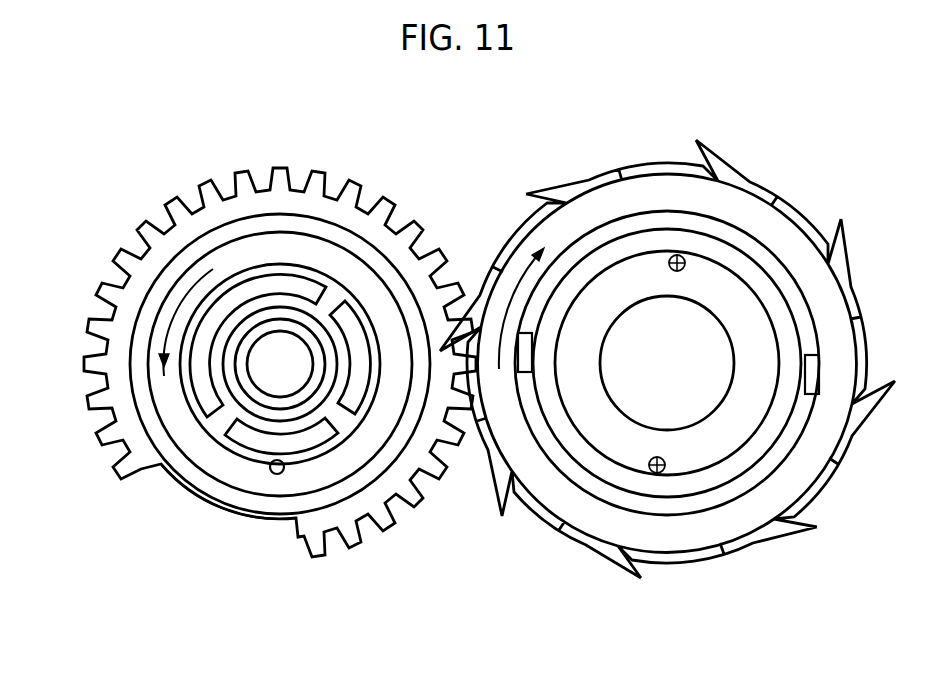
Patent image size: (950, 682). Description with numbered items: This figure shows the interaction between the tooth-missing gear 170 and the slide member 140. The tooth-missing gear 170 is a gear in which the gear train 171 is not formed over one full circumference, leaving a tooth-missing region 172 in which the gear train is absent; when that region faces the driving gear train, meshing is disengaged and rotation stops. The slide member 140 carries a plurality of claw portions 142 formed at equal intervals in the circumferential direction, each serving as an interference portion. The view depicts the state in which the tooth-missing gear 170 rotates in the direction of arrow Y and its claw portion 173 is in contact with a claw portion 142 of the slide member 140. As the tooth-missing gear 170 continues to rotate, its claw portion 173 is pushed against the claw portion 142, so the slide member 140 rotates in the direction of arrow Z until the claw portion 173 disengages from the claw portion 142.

The slide member 140 is at (757, 130).
The claw portion 142 is at (437, 352).
The tooth-missing gear 170 is at (150, 178).
The gear train 171 is at (116, 243).
The tooth-missing region 172 is at (198, 506).
The claw portion 173 is at (443, 360).